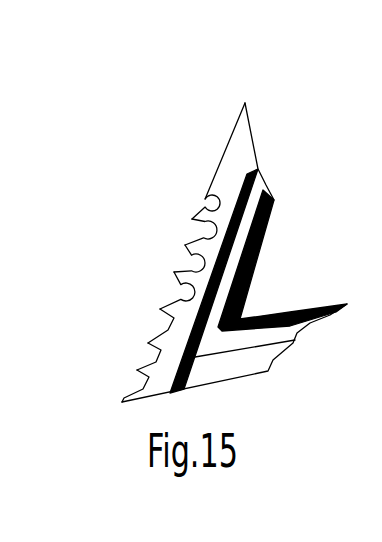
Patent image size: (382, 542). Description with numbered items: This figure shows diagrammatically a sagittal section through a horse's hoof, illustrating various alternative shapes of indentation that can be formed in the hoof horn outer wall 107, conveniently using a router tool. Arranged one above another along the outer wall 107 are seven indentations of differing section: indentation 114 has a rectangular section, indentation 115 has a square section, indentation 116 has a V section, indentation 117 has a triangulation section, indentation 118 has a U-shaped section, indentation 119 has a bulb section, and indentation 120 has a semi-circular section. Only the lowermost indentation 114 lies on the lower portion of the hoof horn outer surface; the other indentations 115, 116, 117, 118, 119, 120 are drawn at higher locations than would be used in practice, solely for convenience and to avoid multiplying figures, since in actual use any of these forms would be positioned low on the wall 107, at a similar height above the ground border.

The hoof horn outer wall 107 is at (240, 168).
The indentation 114 is at (138, 372).
The indentation 115 is at (142, 351).
The indentation 116 is at (161, 323).
The indentation 117 is at (174, 285).
The indentation 118 is at (186, 262).
The indentation 119 is at (193, 236).
The indentation 120 is at (208, 201).